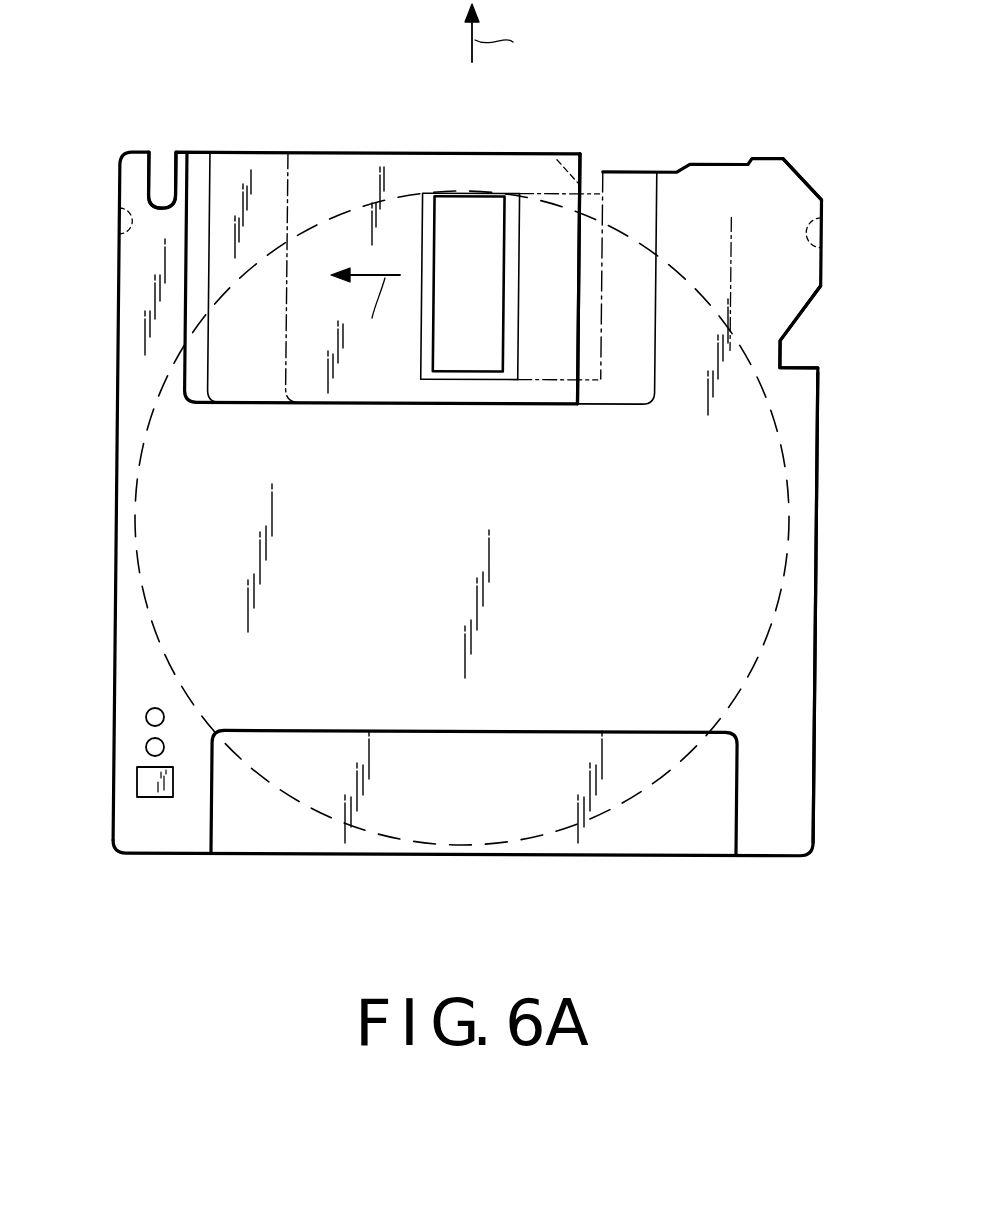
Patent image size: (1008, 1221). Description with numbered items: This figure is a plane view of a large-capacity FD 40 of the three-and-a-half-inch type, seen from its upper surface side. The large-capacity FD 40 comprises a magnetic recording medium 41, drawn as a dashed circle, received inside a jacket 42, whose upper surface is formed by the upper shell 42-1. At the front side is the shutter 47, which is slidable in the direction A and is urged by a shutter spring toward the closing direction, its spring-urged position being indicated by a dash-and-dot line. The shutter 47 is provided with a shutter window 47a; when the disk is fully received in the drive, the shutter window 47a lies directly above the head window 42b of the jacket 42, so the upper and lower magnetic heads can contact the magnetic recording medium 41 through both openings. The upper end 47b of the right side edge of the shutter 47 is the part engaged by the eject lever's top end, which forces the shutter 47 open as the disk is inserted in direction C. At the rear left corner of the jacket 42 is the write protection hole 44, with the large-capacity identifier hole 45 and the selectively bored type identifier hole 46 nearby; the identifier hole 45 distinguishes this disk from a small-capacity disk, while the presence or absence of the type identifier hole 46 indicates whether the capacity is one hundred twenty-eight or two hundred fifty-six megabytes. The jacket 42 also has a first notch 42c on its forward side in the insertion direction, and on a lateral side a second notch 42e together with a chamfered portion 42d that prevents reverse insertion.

The large-capacity FD 40 is at (164, 858).
The magnetic recording medium 41 is at (770, 650).
The jacket 42 is at (812, 560).
The upper shell 42-1 is at (818, 425).
The head window 42b is at (500, 232).
The first notch 42c is at (163, 166).
The chamfered portion 42d is at (793, 172).
The second notch 42e is at (792, 347).
The write protection hole 44 is at (137, 783).
The large-capacity identifier hole 45 is at (145, 748).
The type identifier hole 46 is at (145, 717).
The shutter 47 is at (374, 404).
The shutter window 47a is at (508, 404).
The upper end of right side edge of shutter 47b is at (582, 160).